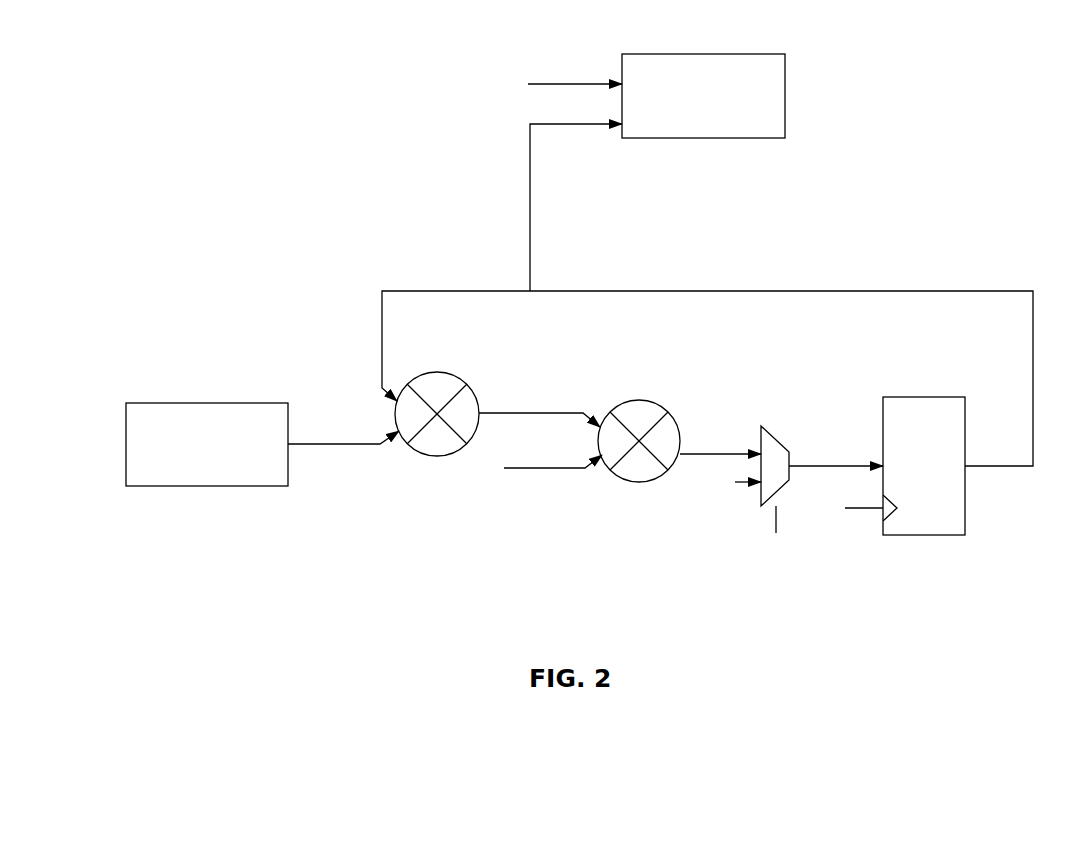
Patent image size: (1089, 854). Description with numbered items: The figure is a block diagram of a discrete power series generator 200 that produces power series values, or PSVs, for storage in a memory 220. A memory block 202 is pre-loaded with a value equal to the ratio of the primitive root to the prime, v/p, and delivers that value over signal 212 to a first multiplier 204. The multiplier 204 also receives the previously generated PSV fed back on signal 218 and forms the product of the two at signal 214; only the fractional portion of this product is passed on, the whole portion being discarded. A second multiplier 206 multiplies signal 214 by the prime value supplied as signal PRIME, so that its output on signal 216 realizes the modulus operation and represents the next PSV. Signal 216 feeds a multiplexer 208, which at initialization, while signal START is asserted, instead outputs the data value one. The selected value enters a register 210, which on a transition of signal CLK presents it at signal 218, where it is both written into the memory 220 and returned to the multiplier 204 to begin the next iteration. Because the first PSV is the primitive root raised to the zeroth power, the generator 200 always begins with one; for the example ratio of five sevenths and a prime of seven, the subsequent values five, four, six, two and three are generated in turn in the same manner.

The discrete power series generator 200 is at (158, 189).
The memory block 202 is at (247, 403).
The multiplier 204 is at (437, 372).
The multiplier 206 is at (640, 400).
The multiplexer 208 is at (775, 436).
The register 210 is at (925, 397).
The signal 212 is at (315, 444).
The signal 214 is at (532, 413).
The signal 216 is at (693, 454).
The signal 218 is at (758, 291).
The memory 220 is at (730, 54).